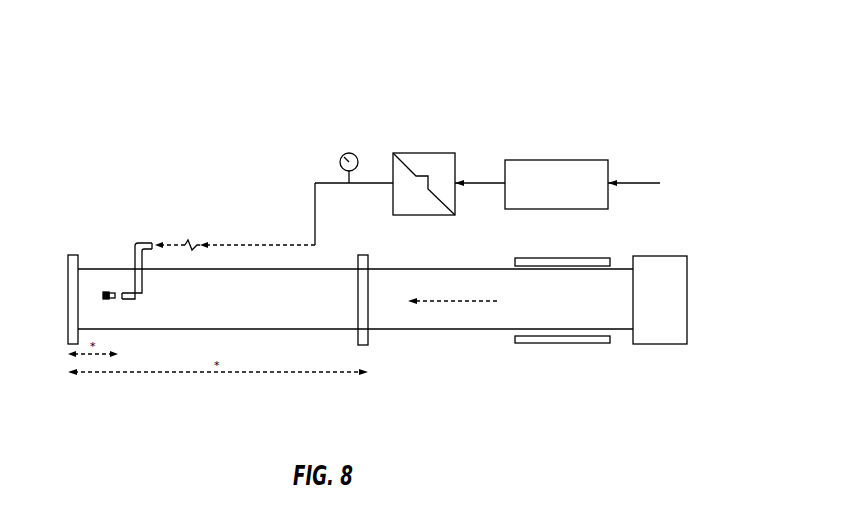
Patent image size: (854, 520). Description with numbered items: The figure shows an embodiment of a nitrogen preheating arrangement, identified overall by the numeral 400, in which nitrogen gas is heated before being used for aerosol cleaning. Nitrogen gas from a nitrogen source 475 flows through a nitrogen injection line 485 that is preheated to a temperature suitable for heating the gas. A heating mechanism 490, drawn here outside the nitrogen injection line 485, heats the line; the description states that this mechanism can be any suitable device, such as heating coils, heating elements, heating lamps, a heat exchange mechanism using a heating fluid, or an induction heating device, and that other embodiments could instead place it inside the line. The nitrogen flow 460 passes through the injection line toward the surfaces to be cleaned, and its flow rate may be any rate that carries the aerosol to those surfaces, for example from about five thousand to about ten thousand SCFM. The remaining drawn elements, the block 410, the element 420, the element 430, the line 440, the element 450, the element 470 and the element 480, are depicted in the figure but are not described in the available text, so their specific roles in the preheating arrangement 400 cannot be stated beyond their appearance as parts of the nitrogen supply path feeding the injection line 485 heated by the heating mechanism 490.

The system 400 is at (175, 98).
The gas source 410 is at (556, 160).
The valve 420 is at (425, 153).
The pressure gauge 430 is at (347, 152).
The gas supply line 440 is at (193, 245).
The sensor 450 is at (103, 295).
The nitrogen flow 460 is at (455, 301).
The gas inlet tube 470 is at (136, 261).
The nitrogen source 475 is at (660, 256).
The process tube 480 is at (300, 268).
The nitrogen injection line 485 is at (402, 330).
The heating mechanism 490 is at (565, 258).